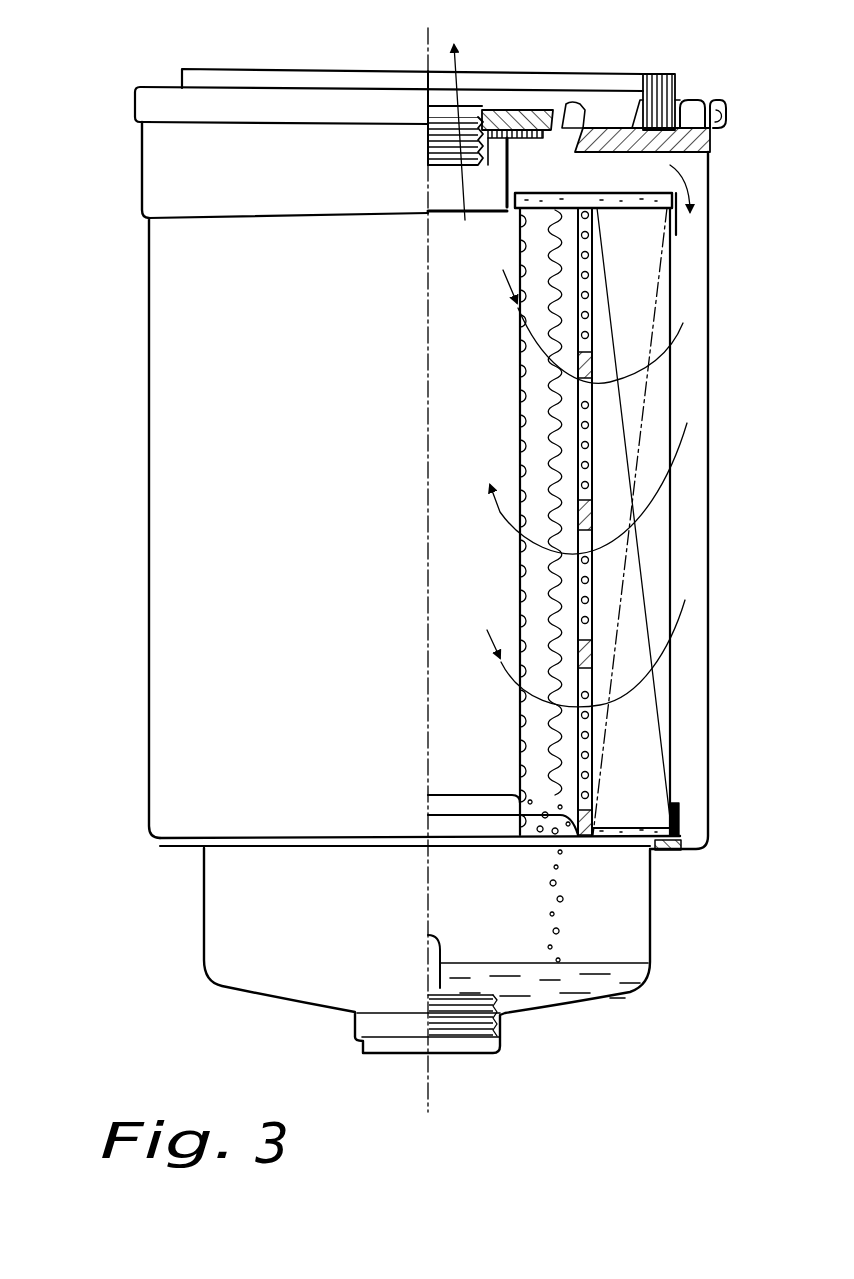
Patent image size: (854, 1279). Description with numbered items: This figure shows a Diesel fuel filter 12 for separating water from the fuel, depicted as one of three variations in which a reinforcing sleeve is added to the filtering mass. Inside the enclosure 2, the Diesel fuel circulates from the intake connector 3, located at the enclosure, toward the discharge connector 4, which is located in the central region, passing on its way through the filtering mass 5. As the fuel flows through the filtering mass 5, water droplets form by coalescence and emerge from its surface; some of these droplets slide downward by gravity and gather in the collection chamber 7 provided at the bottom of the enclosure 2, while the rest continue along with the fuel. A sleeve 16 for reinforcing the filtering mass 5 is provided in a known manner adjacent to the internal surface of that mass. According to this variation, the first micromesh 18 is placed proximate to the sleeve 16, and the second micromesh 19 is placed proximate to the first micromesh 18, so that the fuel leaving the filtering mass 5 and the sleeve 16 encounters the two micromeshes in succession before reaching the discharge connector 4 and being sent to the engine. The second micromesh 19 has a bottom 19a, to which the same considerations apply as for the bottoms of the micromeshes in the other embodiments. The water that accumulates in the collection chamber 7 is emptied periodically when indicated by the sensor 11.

The enclosure 2 is at (705, 270).
The intake connector 3 is at (596, 179).
The discharge connector 4 is at (467, 108).
The filtering mass 5 is at (653, 407).
The collection chamber 7 is at (505, 922).
The sensor 11 is at (443, 960).
The filter 12 is at (146, 443).
The sleeve 16 is at (590, 333).
The first micromesh 18 is at (557, 575).
The second micromesh 19 is at (523, 633).
The bottom of the second micromesh 19a is at (470, 795).